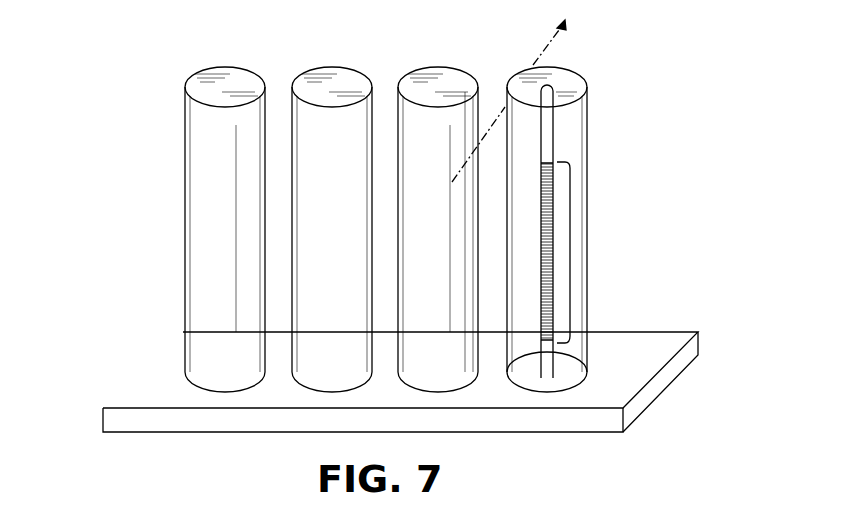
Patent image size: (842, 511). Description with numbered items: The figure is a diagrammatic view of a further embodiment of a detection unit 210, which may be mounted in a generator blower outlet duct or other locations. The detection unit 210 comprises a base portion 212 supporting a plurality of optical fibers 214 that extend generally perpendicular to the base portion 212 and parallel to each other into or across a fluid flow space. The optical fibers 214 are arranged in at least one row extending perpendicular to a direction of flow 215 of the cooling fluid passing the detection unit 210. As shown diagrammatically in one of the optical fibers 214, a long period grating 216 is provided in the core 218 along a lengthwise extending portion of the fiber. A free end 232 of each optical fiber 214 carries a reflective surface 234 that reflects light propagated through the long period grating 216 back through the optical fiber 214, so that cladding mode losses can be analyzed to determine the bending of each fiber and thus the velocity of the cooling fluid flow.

The detection unit 210 is at (128, 166).
The base portion 212 is at (659, 378).
The optical fibers 214 is at (403, 207).
The direction of flow 215 is at (540, 53).
The long period grating 216 is at (571, 252).
The core 218 is at (553, 128).
The free end 232 is at (196, 130).
The reflective surface 234 is at (222, 85).